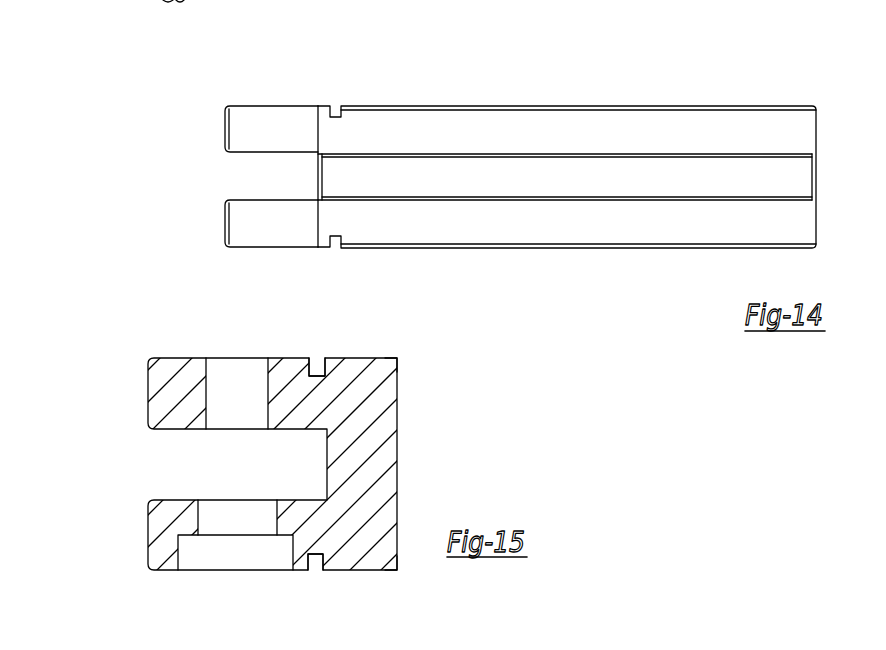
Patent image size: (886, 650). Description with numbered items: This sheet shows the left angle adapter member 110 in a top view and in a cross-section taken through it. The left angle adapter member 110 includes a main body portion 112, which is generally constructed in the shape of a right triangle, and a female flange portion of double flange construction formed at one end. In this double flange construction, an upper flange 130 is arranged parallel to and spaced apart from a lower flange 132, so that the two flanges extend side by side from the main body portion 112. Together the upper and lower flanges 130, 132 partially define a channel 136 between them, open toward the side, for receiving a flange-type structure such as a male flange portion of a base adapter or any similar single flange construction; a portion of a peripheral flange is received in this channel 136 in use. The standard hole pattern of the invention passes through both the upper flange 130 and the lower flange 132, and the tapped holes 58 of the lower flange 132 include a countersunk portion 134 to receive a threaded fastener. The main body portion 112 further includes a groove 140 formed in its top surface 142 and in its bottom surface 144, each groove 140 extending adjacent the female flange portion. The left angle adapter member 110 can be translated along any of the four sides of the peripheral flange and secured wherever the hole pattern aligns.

In FIG. 14, the left angle adapter member 110 is at (387, 100).
In FIG. 15, the left angle adapter member 110 is at (88, 333).
In FIG. 14, the main body portion 112 is at (660, 120).
In FIG. 15, the main body portion 112 is at (388, 452).
In FIG. 14, the upper flange 130 is at (237, 133).
In FIG. 15, the upper flange 130 is at (150, 393).
In FIG. 14, the lower flange 132 is at (243, 227).
In FIG. 15, the lower flange 132 is at (158, 535).
In FIG. 15, the channel 136 is at (188, 462).
In FIG. 15, the tapped holes 58 is at (208, 375).
In FIG. 15, the groove 140 is at (318, 360).
In FIG. 15, the top surface 142 is at (378, 360).
In FIG. 15, the bottom surface 144 is at (375, 572).
In FIG. 15, the countersunk portion 134 is at (292, 553).